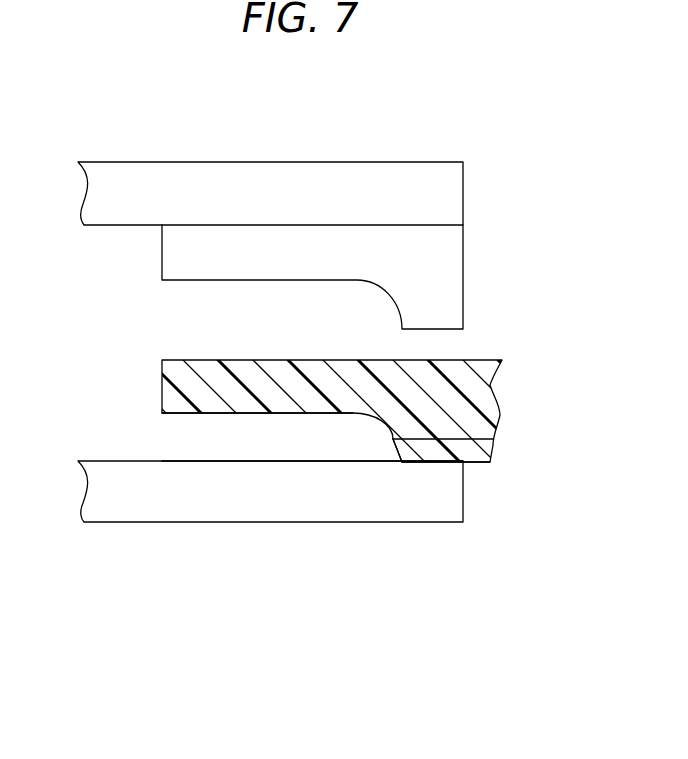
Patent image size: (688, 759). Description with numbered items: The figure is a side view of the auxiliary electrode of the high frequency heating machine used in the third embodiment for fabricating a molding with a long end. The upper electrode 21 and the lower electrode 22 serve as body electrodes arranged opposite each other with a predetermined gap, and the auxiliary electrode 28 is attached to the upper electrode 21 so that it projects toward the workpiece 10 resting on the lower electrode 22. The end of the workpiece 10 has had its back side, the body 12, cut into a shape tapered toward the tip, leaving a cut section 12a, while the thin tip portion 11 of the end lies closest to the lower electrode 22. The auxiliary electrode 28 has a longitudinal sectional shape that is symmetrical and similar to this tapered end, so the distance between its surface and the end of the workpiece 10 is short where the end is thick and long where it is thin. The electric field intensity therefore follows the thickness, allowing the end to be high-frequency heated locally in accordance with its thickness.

The workpiece 10 is at (305, 462).
The element portion 11 is at (410, 462).
The body 12 is at (458, 360).
The cut section 12a is at (252, 413).
The upper electrode 21 is at (427, 185).
The lower electrode 22 is at (452, 495).
The auxiliary electrode 28 is at (452, 260).